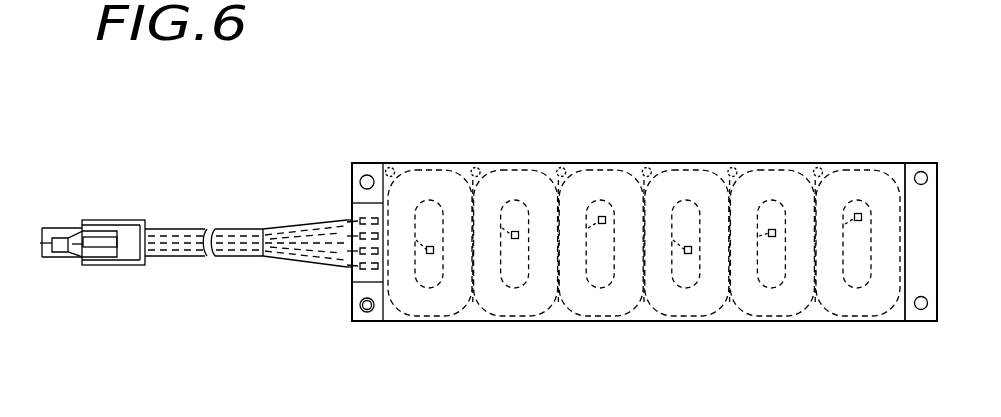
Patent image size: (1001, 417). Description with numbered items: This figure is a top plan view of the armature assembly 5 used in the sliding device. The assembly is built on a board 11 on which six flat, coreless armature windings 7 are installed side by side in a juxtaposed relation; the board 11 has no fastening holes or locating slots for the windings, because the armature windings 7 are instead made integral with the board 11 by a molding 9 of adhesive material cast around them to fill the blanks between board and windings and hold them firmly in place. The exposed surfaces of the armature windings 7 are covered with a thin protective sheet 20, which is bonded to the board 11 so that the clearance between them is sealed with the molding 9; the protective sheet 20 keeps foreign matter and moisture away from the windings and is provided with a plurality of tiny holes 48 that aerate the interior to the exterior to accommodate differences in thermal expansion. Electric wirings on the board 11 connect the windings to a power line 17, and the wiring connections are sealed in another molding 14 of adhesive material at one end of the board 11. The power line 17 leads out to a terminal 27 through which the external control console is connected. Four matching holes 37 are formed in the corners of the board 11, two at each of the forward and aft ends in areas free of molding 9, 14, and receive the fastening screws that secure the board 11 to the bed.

The armature assembly 5 is at (536, 163).
The armature windings 7 is at (493, 187).
The molding 9 is at (808, 167).
The board 11 is at (918, 263).
The molding 14 is at (360, 213).
The power line 17 is at (227, 247).
The protective sheet 20 is at (687, 185).
The terminal 27 is at (128, 232).
The matching holes 37 is at (366, 178).
The tiny holes 48 is at (473, 300).